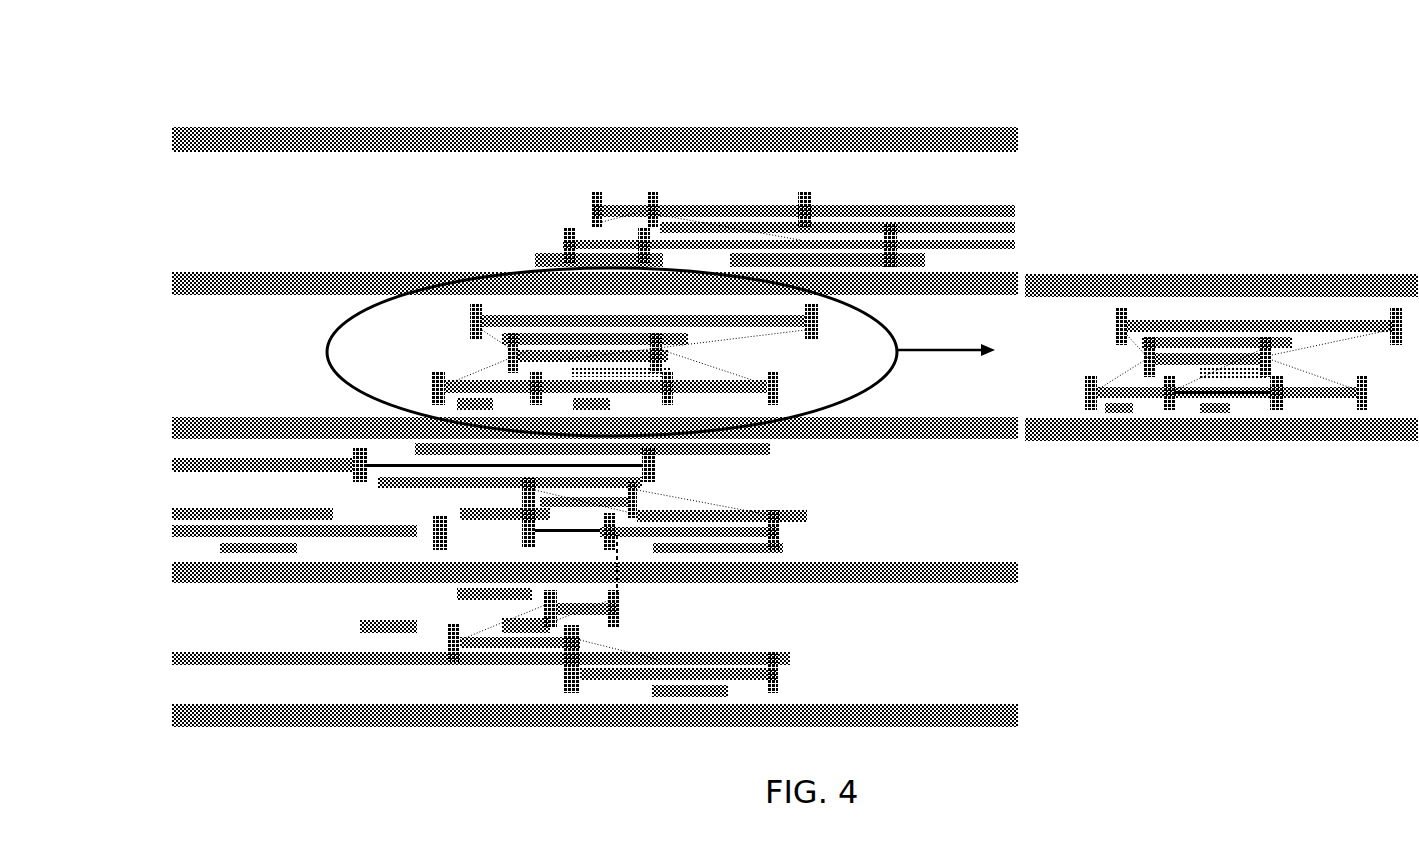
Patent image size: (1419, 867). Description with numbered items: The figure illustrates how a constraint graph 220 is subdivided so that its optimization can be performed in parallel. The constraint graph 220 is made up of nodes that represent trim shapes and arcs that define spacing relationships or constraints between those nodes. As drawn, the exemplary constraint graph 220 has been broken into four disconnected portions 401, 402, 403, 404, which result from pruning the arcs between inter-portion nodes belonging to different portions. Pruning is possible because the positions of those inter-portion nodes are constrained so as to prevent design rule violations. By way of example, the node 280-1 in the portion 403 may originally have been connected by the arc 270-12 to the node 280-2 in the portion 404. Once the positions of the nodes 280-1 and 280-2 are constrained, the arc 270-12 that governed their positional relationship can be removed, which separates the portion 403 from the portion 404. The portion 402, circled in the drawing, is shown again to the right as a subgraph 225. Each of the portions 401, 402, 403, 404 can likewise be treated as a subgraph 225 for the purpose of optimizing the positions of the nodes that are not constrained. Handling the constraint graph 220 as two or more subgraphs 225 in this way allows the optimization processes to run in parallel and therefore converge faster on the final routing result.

The constraint graph 220 is at (264, 92).
The portion 401 is at (231, 213).
The portion 402 is at (236, 358).
The portion 403 is at (211, 490).
The portion 404 is at (203, 630).
The subgraph 225 is at (1294, 245).
The node 280-1 is at (609, 546).
The node 280-2 is at (619, 602).
The arc 270-12 is at (617, 563).